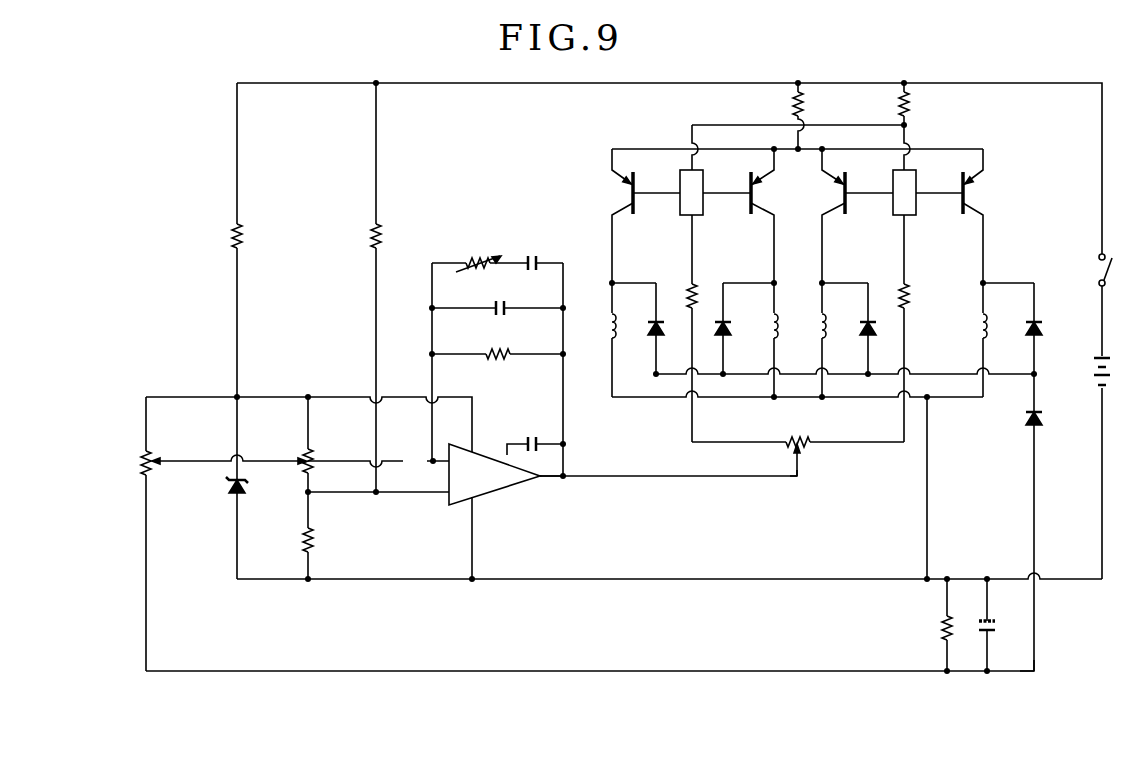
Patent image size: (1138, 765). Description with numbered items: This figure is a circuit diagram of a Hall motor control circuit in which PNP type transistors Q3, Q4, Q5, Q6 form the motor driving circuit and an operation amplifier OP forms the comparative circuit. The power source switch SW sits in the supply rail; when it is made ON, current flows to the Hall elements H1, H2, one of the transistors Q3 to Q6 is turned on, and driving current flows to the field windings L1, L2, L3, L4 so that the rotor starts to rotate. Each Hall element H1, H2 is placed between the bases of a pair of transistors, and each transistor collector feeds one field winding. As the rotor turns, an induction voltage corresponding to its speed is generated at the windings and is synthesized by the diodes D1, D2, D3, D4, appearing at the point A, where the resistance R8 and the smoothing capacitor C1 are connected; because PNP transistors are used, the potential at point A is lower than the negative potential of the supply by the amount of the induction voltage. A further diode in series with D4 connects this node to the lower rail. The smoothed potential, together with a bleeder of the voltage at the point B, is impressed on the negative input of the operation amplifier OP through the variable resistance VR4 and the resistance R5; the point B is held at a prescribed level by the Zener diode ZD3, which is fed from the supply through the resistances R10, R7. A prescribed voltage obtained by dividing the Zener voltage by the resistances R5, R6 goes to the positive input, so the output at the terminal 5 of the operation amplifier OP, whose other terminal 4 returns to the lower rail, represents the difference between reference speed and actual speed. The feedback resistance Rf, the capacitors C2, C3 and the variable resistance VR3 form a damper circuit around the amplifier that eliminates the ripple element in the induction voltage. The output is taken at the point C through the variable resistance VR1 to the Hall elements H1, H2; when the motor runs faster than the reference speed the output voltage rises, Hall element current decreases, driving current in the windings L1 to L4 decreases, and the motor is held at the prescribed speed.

The resistance R10 is at (255, 236).
The resistance R7 is at (389, 236).
The variable resistance VR3 is at (476, 253).
The capacitor C3 is at (532, 252).
The capacitor C2 is at (500, 297).
The feedback resistance Rf is at (498, 367).
The point B is at (237, 394).
The resistance R5 is at (318, 453).
The Zener diode ZD3 is at (256, 489).
The variable resistance VR4 is at (133, 465).
The resistance R6 is at (321, 541).
The operation amplifier OP is at (506, 471).
The terminal 4 is at (481, 538).
The terminal 5 is at (550, 492).
The transistor Q3 is at (630, 195).
The Hall element H1 is at (706, 192).
The transistor Q4 is at (754, 195).
The transistor Q5 is at (842, 195).
The Hall element H2 is at (919, 192).
The transistor Q6 is at (966, 195).
The field winding L1 is at (601, 340).
The diode D1 is at (669, 331).
The diode D3 is at (736, 331).
The field winding L3 is at (789, 340).
The field winding L2 is at (837, 340).
The diode D2 is at (881, 331).
The field winding L4 is at (972, 340).
The diode D4 is at (1048, 477).
The variable resistance VR1 is at (800, 445).
The point C is at (801, 484).
The power source switch SW is at (1098, 266).
The resistance R8 is at (934, 625).
The capacitor C1 is at (1000, 625).
The point A is at (1019, 681).